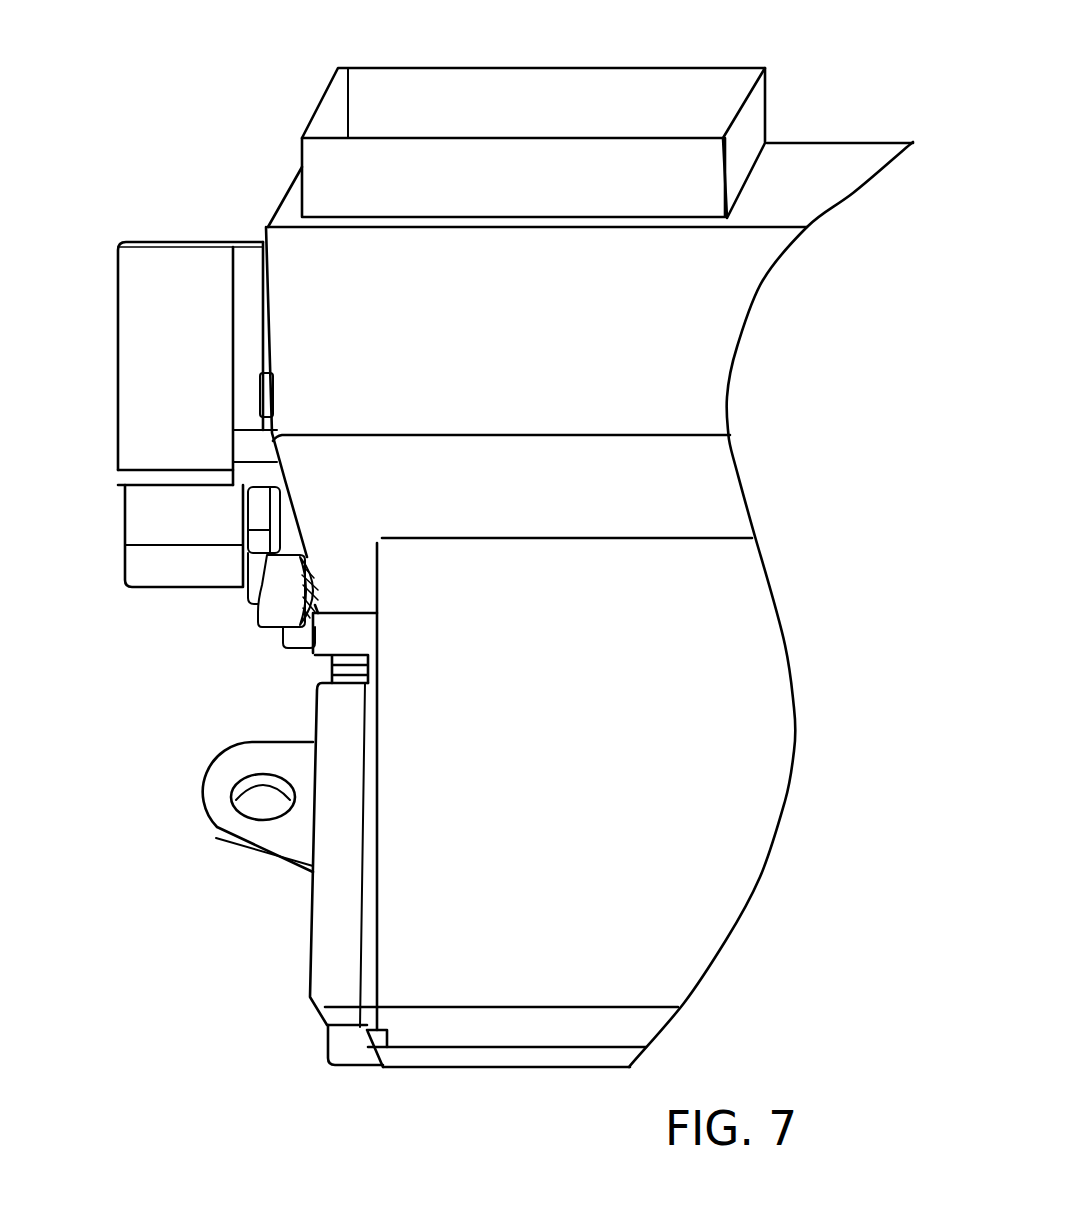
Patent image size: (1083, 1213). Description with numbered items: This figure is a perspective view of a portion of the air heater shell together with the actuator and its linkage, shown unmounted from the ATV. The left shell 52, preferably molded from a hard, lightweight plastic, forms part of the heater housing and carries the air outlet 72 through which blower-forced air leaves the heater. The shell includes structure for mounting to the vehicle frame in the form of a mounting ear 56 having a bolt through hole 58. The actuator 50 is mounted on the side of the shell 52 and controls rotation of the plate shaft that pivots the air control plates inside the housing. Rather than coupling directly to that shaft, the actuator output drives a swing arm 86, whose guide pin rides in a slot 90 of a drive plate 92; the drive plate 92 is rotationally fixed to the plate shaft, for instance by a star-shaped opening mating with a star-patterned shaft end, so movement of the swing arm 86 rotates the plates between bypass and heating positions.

The actuator 50 is at (180, 412).
The left shell 52 is at (330, 248).
The mounting ears 56 is at (218, 805).
The bolt through holes 58 is at (250, 800).
The air outlet 72 is at (685, 93).
The swing arm 86 is at (252, 567).
The slot 90 is at (305, 588).
The drive plate 92 is at (276, 608).